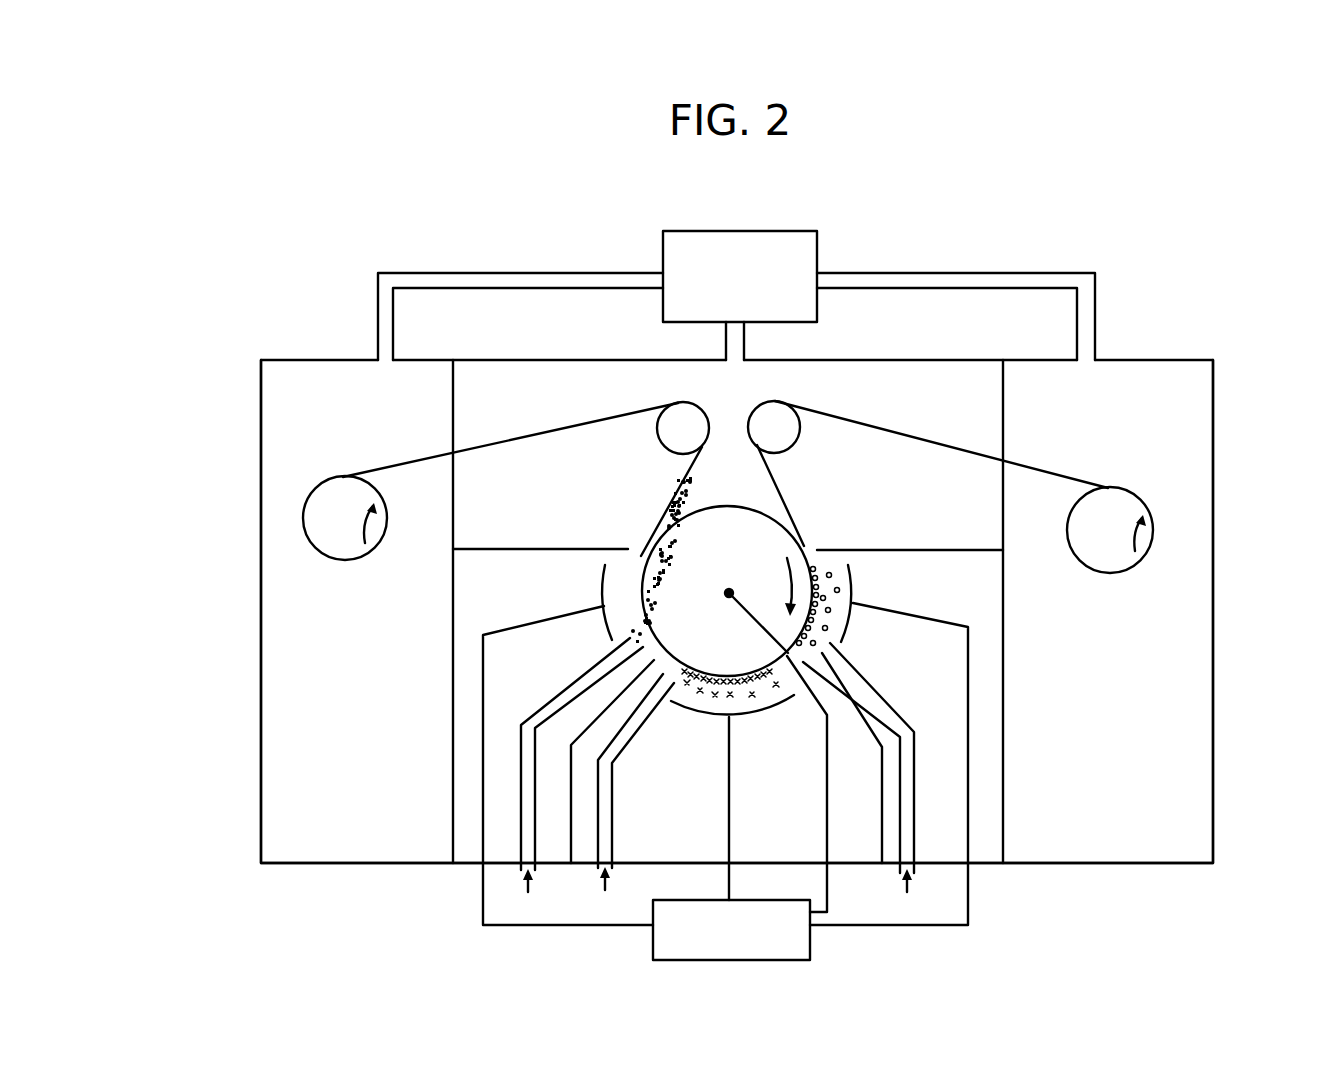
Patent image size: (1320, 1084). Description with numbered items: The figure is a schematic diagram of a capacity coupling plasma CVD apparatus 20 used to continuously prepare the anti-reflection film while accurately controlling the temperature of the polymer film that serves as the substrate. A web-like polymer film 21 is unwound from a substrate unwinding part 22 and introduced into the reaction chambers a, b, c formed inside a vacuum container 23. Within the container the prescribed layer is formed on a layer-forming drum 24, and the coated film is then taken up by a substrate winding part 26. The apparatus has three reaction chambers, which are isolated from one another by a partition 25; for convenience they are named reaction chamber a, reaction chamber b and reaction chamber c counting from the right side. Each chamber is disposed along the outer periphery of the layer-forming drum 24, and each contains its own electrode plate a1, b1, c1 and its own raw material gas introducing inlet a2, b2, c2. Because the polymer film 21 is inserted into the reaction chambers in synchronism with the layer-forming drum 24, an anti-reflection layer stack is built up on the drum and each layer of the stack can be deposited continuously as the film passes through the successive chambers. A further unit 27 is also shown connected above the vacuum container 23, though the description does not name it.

The plasma CVD apparatus 20 is at (198, 853).
The web-like polymer film 21 is at (893, 430).
The substrate unwinding part 22 is at (1152, 538).
The vacuum container 23 is at (1213, 774).
The layer-forming drum 24 is at (687, 570).
The partition 25 is at (880, 830).
The substrate winding part 26 is at (308, 519).
The control unit 27 is at (817, 242).
The electrode plate a1 is at (847, 623).
The electrode plate b1 is at (766, 701).
The electrode plate c1 is at (601, 581).
The raw material gas introducing inlet a2 is at (868, 783).
The raw material gas introducing inlet b2 is at (635, 796).
The raw material gas introducing inlet c2 is at (580, 780).
The reaction chamber a is at (889, 744).
The reaction chamber b is at (731, 870).
The reaction chamber c is at (565, 745).